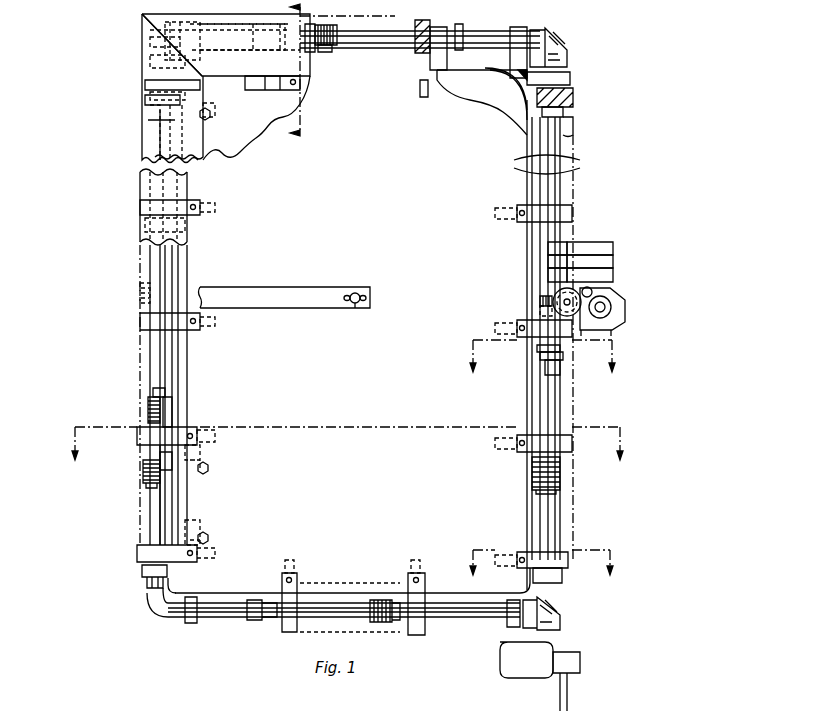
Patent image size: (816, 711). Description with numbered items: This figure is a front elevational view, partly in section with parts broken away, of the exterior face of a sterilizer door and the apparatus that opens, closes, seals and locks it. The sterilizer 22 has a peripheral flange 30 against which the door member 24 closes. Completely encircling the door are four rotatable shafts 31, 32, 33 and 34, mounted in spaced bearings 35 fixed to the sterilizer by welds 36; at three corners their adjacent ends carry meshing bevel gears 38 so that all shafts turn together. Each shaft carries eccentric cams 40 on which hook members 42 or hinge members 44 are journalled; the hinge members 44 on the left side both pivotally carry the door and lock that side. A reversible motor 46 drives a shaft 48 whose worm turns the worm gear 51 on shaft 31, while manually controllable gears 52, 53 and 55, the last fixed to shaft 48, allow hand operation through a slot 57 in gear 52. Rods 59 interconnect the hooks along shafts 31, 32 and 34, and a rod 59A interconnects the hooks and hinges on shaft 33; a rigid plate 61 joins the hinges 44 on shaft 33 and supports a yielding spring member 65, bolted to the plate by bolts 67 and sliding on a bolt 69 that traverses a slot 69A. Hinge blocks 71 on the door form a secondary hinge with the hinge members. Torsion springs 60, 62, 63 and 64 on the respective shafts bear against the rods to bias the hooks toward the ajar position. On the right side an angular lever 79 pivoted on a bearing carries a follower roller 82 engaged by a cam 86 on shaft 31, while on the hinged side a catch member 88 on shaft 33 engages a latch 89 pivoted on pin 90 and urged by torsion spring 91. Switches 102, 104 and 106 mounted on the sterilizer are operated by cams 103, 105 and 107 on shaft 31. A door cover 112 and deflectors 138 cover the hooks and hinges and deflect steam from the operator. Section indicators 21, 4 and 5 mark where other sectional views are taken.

The section line 21 is at (329, 72).
The sterilizer 22 is at (570, 120).
The door member 24 is at (568, 170).
The peripheral flange 30 is at (425, 68).
The rotatable shaft 31 is at (525, 164).
The rotatable shaft 32 is at (270, 50).
The rotatable shaft 33 is at (142, 126).
The rotatable shaft 34 is at (480, 618).
The bearing 35 is at (200, 48).
The weld 36 is at (493, 68).
The bevel gear 38 is at (142, 36).
The eccentric cam 40 is at (424, 32).
The hook member 42 is at (275, 77).
The hinge member 44 is at (170, 85).
The reversible motor 46 is at (526, 660).
The shaft 48 is at (540, 313).
The worm gear 51 is at (540, 296).
The manually controllable gear 52 is at (612, 310).
The idler gear 53 is at (618, 290).
The manually controllable gear 55 is at (572, 314).
The slot 57 is at (618, 325).
The rod 59 is at (372, 50).
The rod 59A is at (165, 505).
The torsion spring 60 is at (560, 476).
The rigid plate 61 is at (140, 220).
The torsion spring 62 is at (326, 52).
The torsion spring 63 is at (145, 470).
The torsion spring 64 is at (380, 600).
The yielding spring member 65 is at (245, 292).
The bolt 67 is at (140, 292).
The bolt 69 is at (355, 308).
The slot 69A is at (350, 294).
The hinge block 71 is at (210, 470).
The angular lever 79 is at (537, 349).
The follower roller 82 is at (540, 358).
The cam 86 is at (548, 370).
The catch member 88 is at (172, 425).
The latch 89 is at (150, 430).
The pin 90 is at (165, 392).
The torsion spring 91 is at (148, 408).
The switch 102 is at (613, 246).
The cam 103 is at (548, 248).
The switch 104 is at (613, 259).
The cam 105 is at (548, 261).
The switch 106 is at (613, 274).
The cam 107 is at (548, 275).
The door cover 112 is at (256, 118).
The deflector 138 is at (148, 143).
The section line 4 is at (347, 451).
The section line 5 is at (541, 365).